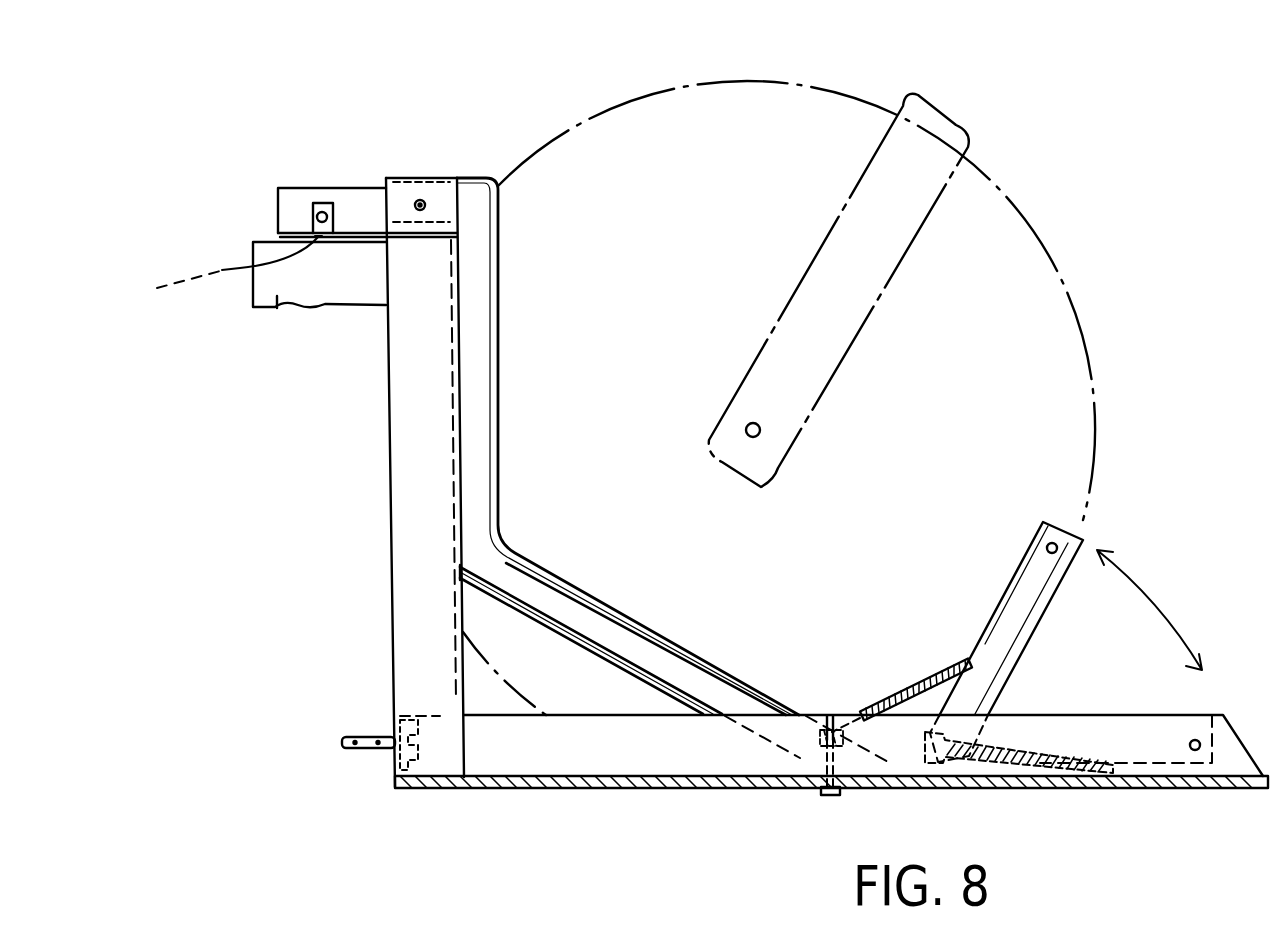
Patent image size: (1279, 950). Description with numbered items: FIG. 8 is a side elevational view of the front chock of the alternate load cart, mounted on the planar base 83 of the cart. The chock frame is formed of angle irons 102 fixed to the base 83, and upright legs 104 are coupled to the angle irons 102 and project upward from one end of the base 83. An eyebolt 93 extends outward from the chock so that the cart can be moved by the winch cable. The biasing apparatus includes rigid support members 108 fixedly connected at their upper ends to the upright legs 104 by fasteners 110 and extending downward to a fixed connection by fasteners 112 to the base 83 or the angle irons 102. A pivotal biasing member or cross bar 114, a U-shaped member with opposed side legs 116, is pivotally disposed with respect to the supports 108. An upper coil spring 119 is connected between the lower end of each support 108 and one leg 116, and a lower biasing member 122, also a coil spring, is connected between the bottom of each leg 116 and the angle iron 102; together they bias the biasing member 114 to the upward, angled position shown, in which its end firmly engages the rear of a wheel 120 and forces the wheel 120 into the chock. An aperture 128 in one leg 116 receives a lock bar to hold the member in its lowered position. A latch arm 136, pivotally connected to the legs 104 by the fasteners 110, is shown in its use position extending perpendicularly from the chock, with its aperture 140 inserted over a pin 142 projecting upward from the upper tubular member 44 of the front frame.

The horizontal upper tubular member 44 is at (277, 308).
The planar base 83 is at (430, 788).
The eyebolt 93 is at (370, 728).
The angle irons 102 is at (537, 763).
The upright legs 104 is at (403, 500).
The rigid support members 108 is at (480, 378).
The fasteners 110 is at (417, 203).
The fasteners 112 is at (822, 760).
The pivotal biasing member 114 is at (1026, 582).
The side legs 116 is at (1026, 607).
The upper coil spring 119 is at (913, 693).
The wheel 120 is at (1003, 262).
The lower biasing member 122 is at (1053, 760).
The aperture 128 is at (1057, 547).
The latch arm 136 is at (239, 158).
The aperture 140 is at (223, 289).
The pin 142 is at (313, 203).